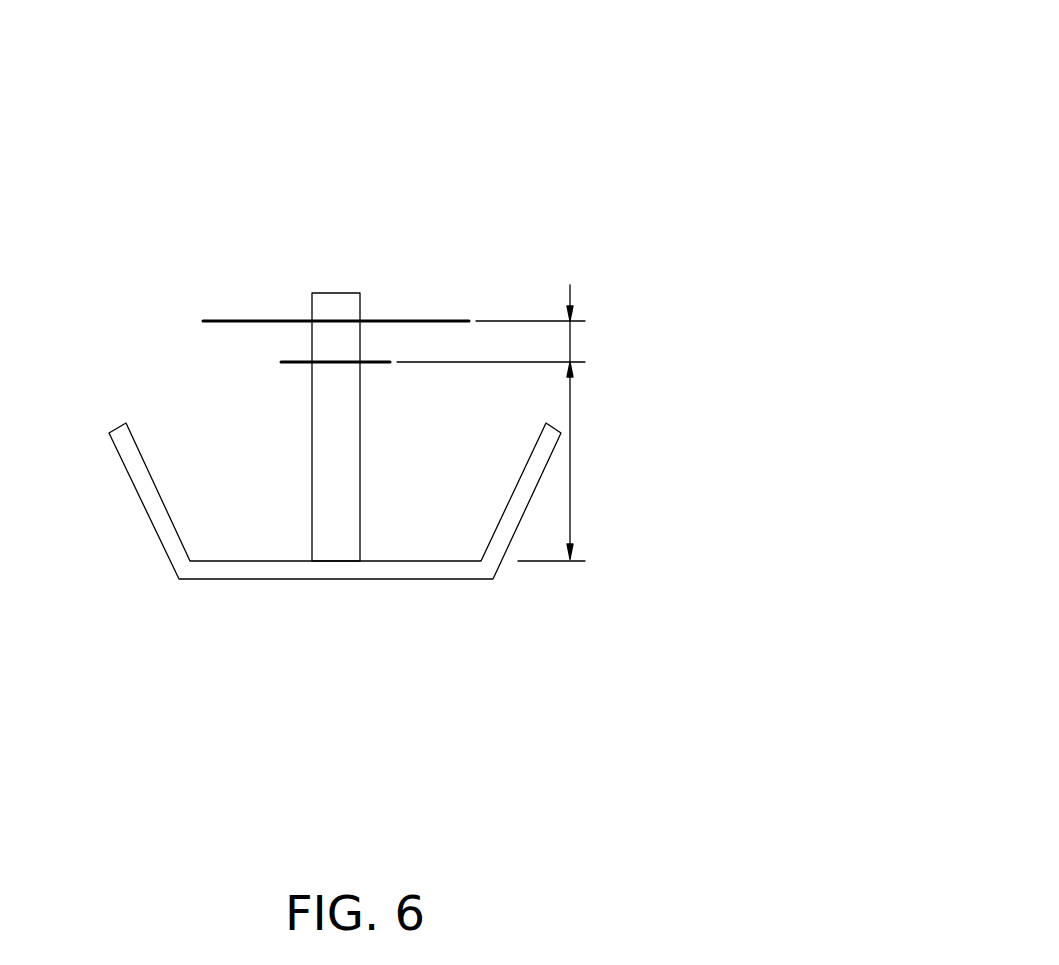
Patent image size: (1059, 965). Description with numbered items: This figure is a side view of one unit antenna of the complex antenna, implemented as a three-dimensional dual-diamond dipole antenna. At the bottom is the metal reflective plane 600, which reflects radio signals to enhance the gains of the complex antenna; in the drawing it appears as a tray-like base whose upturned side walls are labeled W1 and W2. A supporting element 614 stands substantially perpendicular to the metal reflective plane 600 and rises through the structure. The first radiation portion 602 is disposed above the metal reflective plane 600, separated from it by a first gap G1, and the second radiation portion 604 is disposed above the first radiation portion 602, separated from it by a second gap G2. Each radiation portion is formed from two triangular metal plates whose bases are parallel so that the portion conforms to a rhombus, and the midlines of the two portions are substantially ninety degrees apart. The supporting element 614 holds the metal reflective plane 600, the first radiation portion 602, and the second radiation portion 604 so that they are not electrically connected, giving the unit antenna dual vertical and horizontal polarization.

The metal reflective plane 600 is at (392, 572).
The first radiation portion 602 is at (293, 365).
The second radiation portion 604 is at (400, 318).
The supporting element 614 is at (340, 298).
The first wall W1 is at (155, 507).
The second wall W2 is at (515, 506).
The first gap G1 is at (565, 461).
The second gap G2 is at (491, 331).